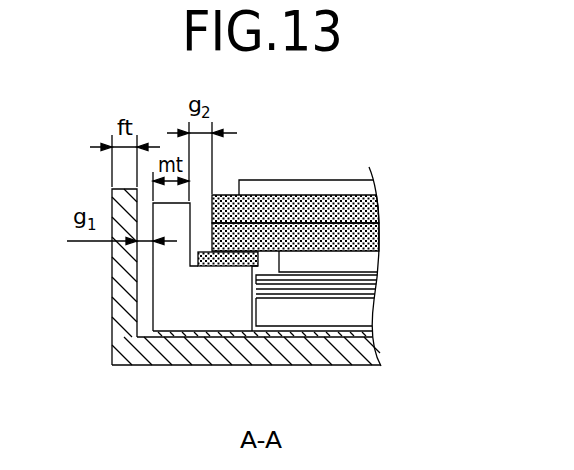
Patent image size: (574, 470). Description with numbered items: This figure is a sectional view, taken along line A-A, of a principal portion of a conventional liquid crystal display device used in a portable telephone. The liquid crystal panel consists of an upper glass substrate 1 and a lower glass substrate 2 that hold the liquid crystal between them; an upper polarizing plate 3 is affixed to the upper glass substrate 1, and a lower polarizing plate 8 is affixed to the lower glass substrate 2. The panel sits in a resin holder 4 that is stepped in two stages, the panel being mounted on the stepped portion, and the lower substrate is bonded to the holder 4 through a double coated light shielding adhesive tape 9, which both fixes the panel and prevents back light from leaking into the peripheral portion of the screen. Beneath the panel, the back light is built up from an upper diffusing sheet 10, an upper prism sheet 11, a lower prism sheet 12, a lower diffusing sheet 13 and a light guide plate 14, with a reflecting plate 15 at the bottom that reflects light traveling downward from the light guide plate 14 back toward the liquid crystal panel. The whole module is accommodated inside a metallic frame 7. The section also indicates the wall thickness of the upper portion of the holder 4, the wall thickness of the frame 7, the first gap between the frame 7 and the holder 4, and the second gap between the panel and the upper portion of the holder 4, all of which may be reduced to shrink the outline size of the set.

The upper glass substrate 1 is at (332, 205).
The lower glass substrate 2 is at (377, 230).
The upper polarizing plate 3 is at (285, 188).
The holder 4 is at (172, 323).
The metallic frame 7 is at (112, 298).
The lower polarizing plate 8 is at (370, 263).
The double coated light shielding adhesive tape 9 is at (233, 260).
The upper diffusing sheet 10 is at (373, 278).
The upper prism sheet 11 is at (367, 285).
The lower prism sheet 12 is at (367, 295).
The lower diffusing sheet 13 is at (362, 318).
The light guide plate 14 is at (373, 334).
The reflecting plate 15 is at (342, 345).